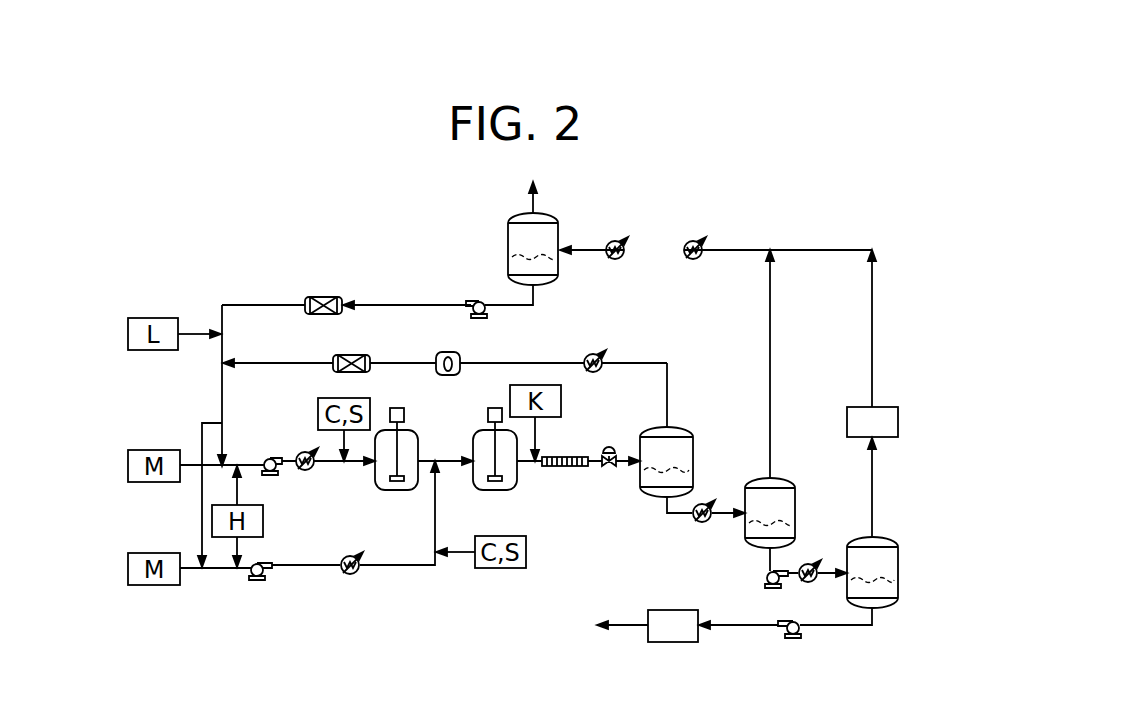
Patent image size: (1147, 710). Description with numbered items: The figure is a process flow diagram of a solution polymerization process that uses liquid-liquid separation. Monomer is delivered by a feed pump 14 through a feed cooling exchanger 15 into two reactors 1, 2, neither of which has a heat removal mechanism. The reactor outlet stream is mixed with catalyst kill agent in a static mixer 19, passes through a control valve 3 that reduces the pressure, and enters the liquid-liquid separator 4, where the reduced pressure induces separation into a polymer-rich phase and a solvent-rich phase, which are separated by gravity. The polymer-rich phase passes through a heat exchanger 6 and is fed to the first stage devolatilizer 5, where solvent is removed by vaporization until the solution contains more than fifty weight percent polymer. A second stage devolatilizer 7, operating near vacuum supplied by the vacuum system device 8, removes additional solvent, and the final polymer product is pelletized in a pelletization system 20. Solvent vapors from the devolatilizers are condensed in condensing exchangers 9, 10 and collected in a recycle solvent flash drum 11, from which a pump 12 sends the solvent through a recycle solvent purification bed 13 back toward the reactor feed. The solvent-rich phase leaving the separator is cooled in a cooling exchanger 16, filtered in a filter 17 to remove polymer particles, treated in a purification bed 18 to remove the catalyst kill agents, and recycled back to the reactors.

The reactor 1 is at (396, 491).
The reactor 2 is at (496, 491).
The control valve 3 is at (609, 467).
The liquid-liquid separator 4 is at (693, 447).
The first stage devolatilizer 5 is at (795, 494).
The heat exchanger 6 is at (696, 520).
The second stage devolatilizer 7 is at (897, 540).
The vacuum system device 8 is at (895, 407).
The condensing exchanger 9 is at (700, 258).
The condensing exchanger 10 is at (622, 259).
The recycle solvent flash drum 11 is at (558, 232).
The pump 12 is at (479, 301).
The recycle solvent purification bed 13 is at (323, 296).
The feed pump 14 is at (271, 475).
The feed cooling exchanger 15 is at (311, 469).
The cooling exchanger 16 is at (599, 372).
The filter 17 is at (460, 358).
The purification bed 18 is at (352, 354).
The static mixer 19 is at (577, 467).
The pelletization system 20 is at (690, 642).